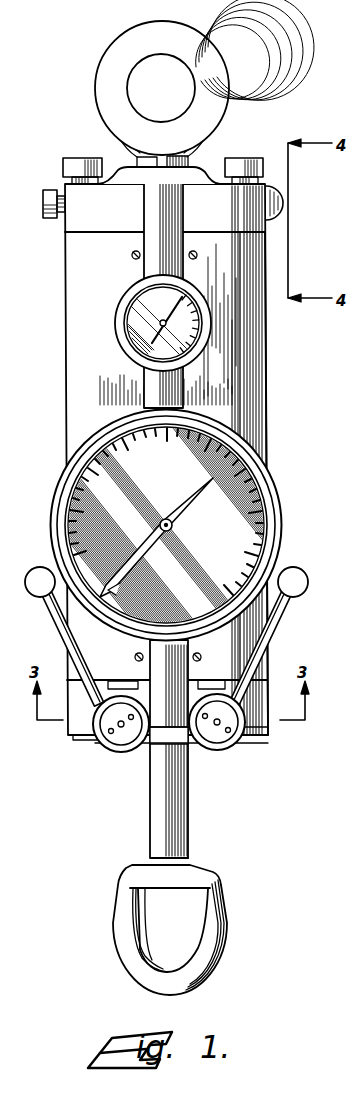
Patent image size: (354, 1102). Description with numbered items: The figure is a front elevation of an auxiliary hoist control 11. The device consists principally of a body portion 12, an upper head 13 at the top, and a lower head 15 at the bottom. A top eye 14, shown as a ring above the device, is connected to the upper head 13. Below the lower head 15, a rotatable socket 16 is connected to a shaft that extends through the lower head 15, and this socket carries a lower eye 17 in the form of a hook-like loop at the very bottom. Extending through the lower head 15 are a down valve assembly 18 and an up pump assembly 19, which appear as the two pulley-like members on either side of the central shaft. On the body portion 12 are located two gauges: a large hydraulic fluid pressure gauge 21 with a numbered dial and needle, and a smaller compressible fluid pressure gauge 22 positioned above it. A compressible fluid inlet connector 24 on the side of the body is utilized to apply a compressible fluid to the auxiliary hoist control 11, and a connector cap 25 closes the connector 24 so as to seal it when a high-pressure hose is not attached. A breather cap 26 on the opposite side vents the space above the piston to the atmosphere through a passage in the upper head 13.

The auxiliary hoist control 11 is at (272, 388).
The body portion 12 is at (266, 430).
The upper head 13 is at (210, 200).
The top eye 14 is at (213, 56).
The lower head 15 is at (276, 728).
The rotatable socket 16 is at (203, 865).
The lower eye 17 is at (221, 951).
The down valve assembly 18 is at (228, 748).
The up pump assembly 19 is at (118, 750).
The hydraulic fluid pressure gauge 21 is at (281, 523).
The compressible fluid pressure gauge 22 is at (115, 321).
The compressible fluid inlet connector 24 is at (59, 218).
The connector cap 25 is at (50, 186).
The breather cap 26 is at (277, 205).